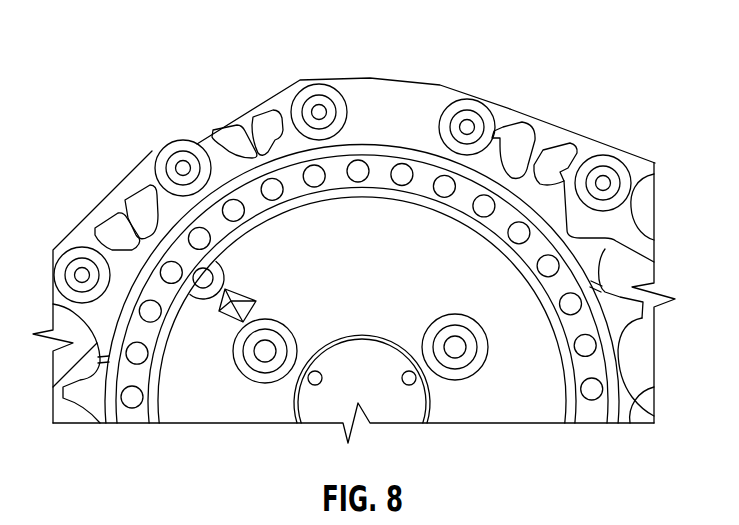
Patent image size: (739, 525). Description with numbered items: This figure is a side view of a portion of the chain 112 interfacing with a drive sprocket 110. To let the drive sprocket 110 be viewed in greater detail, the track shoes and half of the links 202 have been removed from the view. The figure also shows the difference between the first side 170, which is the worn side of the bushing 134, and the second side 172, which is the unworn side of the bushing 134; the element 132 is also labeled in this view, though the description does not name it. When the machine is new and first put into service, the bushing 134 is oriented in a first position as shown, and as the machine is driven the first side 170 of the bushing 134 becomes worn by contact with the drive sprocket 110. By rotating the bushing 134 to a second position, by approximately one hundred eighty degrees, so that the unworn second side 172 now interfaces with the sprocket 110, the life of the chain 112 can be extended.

The drive sprocket 110 is at (528, 387).
The chain 112 is at (496, 112).
The mounting boss 132 is at (168, 177).
The bushing 134 is at (329, 96).
The first side 170 is at (322, 132).
The second side 172 is at (314, 85).
The links 202 is at (570, 128).